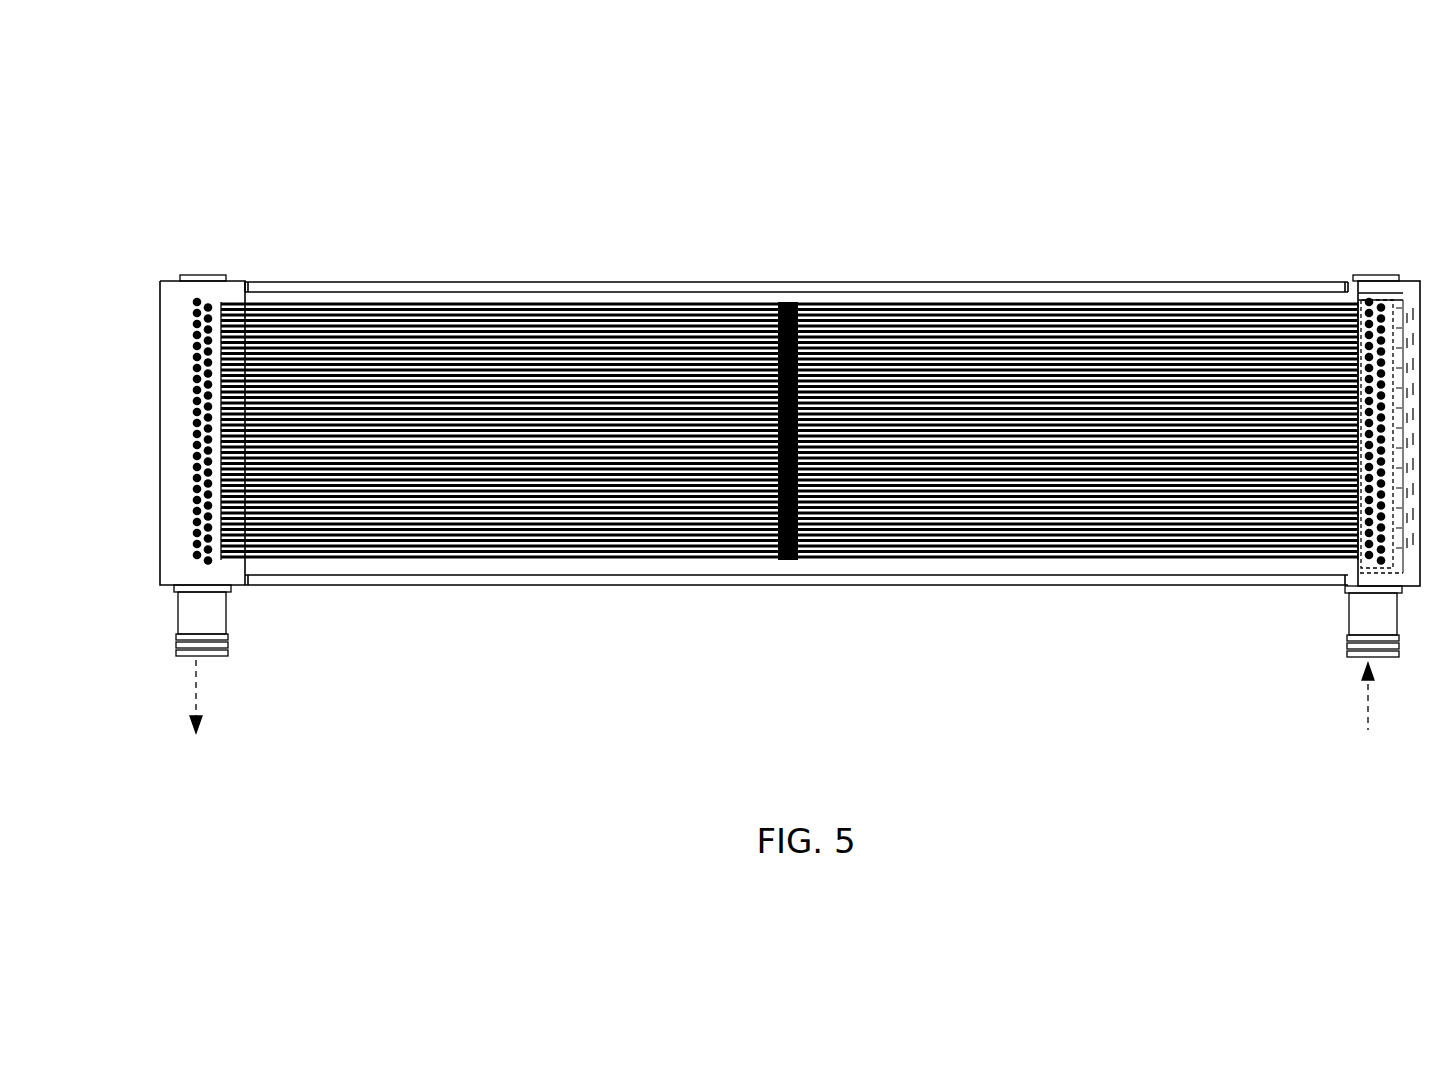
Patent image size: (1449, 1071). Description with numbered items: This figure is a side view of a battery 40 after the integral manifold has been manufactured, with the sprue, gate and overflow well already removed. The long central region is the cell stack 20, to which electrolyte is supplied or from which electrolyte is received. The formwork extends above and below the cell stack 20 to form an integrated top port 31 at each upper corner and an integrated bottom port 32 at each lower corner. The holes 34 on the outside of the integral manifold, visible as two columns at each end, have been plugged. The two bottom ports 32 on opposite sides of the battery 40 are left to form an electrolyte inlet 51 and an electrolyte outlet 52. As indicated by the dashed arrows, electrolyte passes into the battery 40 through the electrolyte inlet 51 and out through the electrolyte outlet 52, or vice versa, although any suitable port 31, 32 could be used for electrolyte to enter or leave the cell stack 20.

The battery 40 is at (220, 105).
The cell stack 20 is at (686, 296).
The top port 31 is at (193, 267).
The bottom port 32 is at (203, 607).
The holes 34 is at (213, 301).
The electrolyte inlet 51 is at (1388, 648).
The electrolyte outlet 52 is at (161, 647).